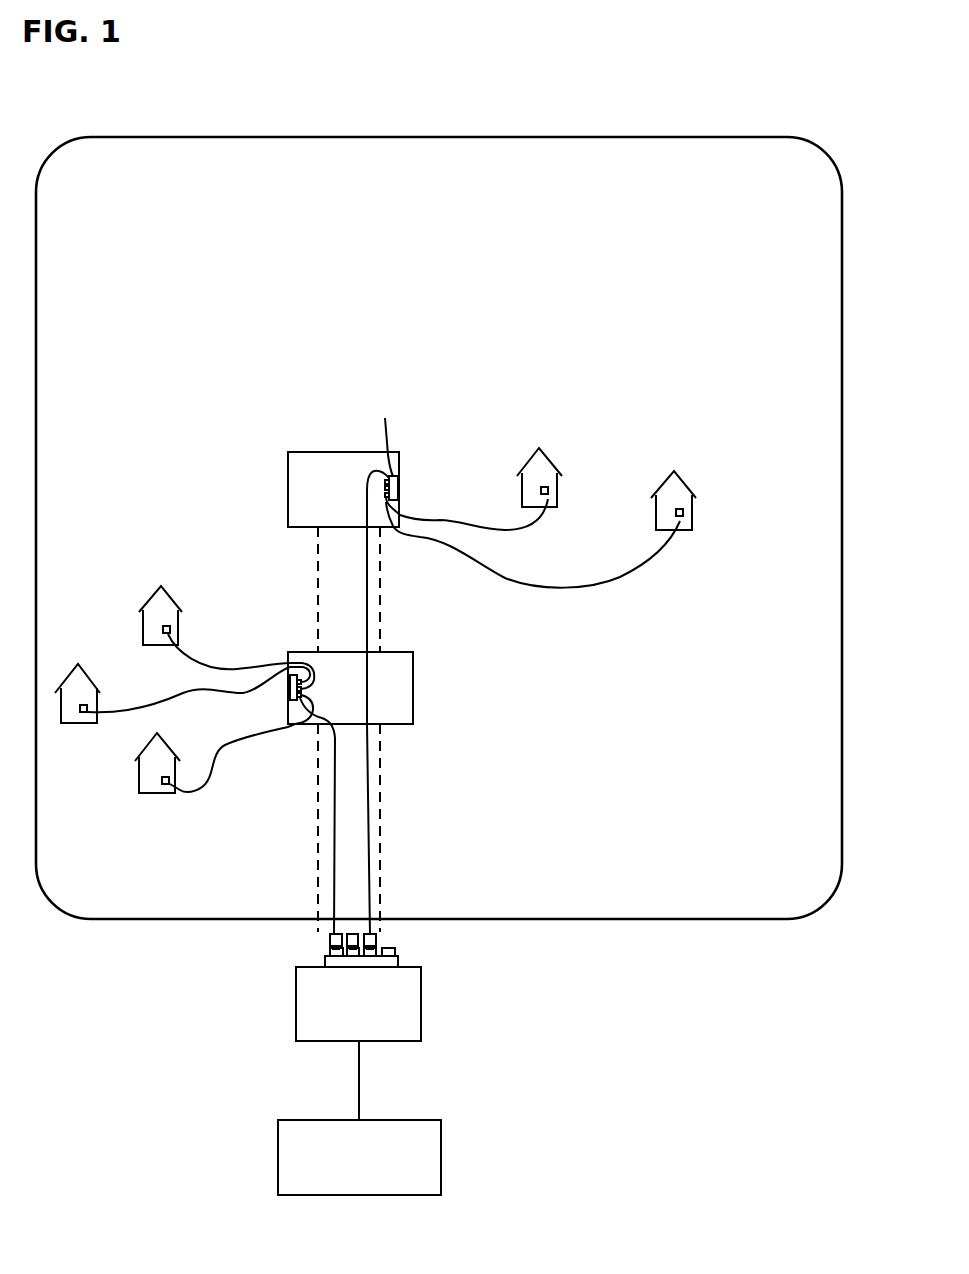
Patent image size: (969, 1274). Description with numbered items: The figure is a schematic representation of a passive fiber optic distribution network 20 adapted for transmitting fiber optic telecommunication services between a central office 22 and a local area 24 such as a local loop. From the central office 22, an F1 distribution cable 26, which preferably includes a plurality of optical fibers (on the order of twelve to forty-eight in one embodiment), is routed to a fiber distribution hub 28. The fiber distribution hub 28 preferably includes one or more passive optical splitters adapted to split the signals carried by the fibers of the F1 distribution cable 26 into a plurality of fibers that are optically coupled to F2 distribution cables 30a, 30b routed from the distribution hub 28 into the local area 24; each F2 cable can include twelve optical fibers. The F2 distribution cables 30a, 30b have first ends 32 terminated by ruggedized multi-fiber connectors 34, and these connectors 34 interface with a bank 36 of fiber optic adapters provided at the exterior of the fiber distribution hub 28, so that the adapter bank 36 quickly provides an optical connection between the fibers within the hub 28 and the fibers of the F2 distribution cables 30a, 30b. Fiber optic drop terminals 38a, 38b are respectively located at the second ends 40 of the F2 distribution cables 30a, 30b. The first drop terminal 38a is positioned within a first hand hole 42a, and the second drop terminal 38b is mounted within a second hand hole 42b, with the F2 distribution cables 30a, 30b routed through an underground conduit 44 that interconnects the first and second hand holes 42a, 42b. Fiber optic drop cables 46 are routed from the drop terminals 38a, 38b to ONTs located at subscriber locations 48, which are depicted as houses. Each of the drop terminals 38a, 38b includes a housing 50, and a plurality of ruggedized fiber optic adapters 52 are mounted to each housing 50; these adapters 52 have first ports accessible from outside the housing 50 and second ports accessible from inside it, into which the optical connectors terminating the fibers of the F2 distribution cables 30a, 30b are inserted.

The passive fiber optic distribution network 20 is at (397, 123).
The central office 22 is at (441, 1147).
The local area 24 is at (629, 919).
The F1 distribution cable 26 is at (357, 1080).
The F1 distribution cable F1 is at (359, 1086).
The fiber distribution hub 28 is at (421, 1002).
The F2 distribution cable 30a is at (334, 851).
The F2 distribution cable 30b is at (370, 875).
The first end 32 is at (330, 929).
The ruggedized multi-fiber connector 34 is at (377, 938).
The bank of fiber optic adapters 36 is at (398, 961).
The first drop terminal 38a is at (417, 490).
The second drop terminal 38b is at (282, 692).
The second end 40 is at (384, 436).
The first hand hole 42a is at (288, 497).
The second hand hole 42b is at (413, 680).
The underground conduit 44 is at (404, 729).
The F2 distribution cable F2 is at (390, 817).
The fiber optic drop cable 46 is at (212, 769).
The subscriber location 48 is at (141, 775).
The housing 50 is at (398, 481).
The ruggedized fiber optic adapter 52 is at (385, 486).